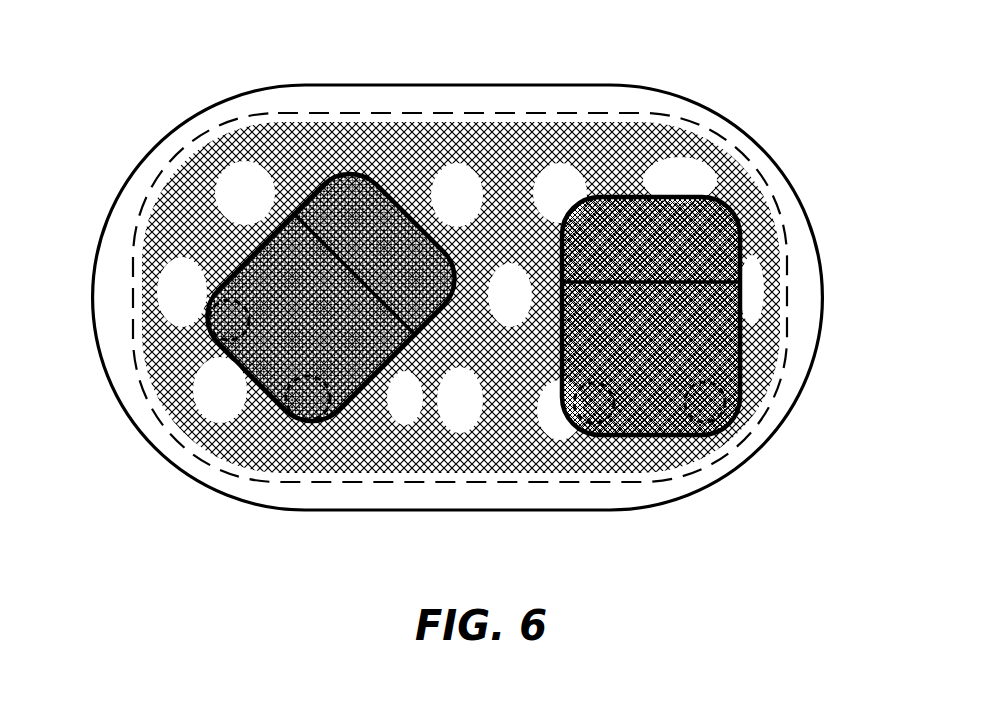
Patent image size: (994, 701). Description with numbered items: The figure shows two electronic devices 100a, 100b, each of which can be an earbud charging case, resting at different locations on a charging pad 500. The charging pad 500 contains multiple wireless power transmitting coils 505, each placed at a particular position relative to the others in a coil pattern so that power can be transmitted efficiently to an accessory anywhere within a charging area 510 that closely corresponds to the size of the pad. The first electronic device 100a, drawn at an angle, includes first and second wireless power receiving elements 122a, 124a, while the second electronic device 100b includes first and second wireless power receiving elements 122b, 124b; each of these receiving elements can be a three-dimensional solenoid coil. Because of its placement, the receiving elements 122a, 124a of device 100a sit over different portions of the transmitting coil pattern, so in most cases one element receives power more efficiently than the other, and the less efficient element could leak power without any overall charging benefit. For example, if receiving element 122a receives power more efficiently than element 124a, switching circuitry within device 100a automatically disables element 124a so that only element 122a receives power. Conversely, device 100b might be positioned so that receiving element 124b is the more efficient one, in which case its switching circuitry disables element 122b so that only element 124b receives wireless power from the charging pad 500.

The charging pad 500 is at (800, 103).
The charging area 510 is at (152, 204).
The wireless power transmitting coils 505 is at (774, 262).
The electronic device 100a is at (310, 180).
The electronic device 100b is at (614, 210).
The first wireless power receiving element 122a is at (207, 327).
The second wireless power receiving element 124a is at (293, 413).
The first wireless power receiving element 122b is at (606, 437).
The second wireless power receiving element 124b is at (727, 422).